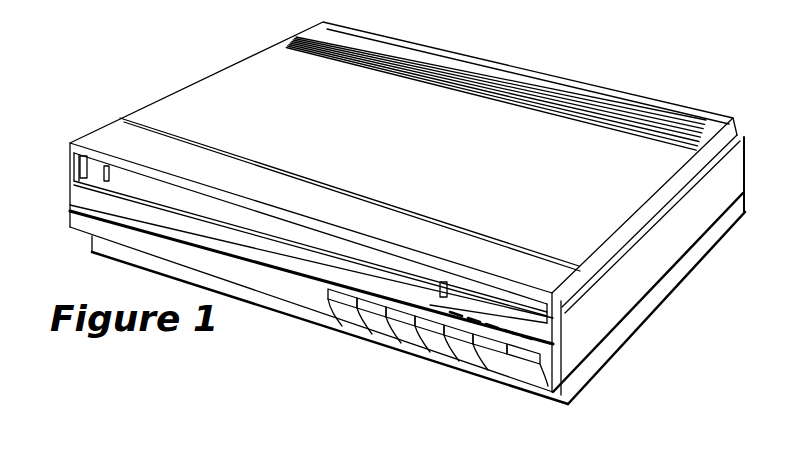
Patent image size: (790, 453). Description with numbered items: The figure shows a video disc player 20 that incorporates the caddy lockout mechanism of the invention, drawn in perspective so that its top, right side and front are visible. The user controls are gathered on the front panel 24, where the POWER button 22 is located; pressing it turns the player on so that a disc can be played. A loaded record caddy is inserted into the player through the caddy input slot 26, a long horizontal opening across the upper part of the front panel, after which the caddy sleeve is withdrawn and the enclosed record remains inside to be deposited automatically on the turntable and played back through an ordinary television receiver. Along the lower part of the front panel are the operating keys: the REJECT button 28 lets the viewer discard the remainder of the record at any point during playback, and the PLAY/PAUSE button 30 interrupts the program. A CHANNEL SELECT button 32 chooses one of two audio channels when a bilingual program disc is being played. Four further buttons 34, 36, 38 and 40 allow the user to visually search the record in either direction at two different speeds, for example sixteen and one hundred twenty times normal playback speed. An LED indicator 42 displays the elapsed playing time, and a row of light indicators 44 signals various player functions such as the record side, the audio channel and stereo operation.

The video disc player 20 is at (666, 386).
The POWER button 22 is at (528, 362).
The front panel 24 is at (140, 243).
The caddy input slot 26 is at (127, 180).
The REJECT button 28 is at (489, 347).
The PLAY/PAUSE button 30 is at (455, 338).
The CHANNEL SELECT button 32 is at (340, 290).
The visual search button 34 is at (425, 328).
The visual search button 36 is at (403, 330).
The visual search button 38 is at (380, 322).
The visual search button 40 is at (345, 322).
The LED indicator 42 is at (480, 298).
The light indicators 44 is at (545, 367).